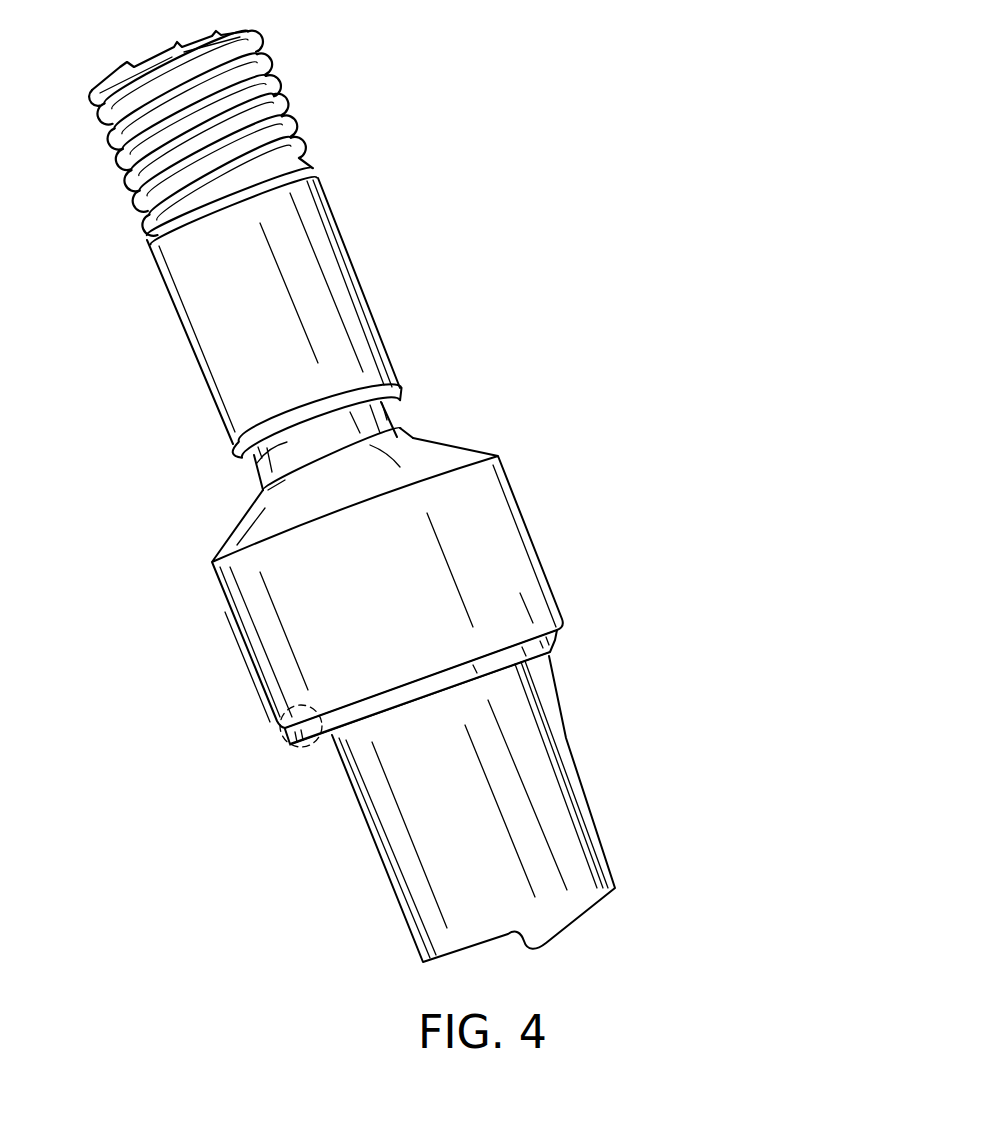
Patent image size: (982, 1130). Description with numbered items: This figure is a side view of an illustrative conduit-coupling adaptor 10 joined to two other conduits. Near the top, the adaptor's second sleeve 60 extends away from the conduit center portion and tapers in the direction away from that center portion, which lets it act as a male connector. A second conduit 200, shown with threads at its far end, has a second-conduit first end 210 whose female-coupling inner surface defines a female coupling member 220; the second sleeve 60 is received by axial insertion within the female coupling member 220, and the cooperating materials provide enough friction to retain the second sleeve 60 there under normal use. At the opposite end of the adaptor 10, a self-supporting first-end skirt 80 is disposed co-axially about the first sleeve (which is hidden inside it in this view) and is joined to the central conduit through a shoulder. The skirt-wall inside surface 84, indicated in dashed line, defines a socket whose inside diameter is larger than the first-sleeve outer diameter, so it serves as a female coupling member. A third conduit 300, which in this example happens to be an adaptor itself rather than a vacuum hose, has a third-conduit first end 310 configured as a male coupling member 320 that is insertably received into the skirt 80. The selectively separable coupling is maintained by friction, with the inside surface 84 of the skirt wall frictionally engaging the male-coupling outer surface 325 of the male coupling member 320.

The body 10 is at (522, 522).
The second sleeve 60 is at (258, 478).
The first-end skirt 80 is at (262, 660).
The skirt-wall inside surface 84 is at (318, 752).
The second conduit 200 is at (133, 183).
The second-conduit first end 210 is at (198, 317).
The female coupling member 220 is at (342, 303).
The third conduit 300 is at (372, 817).
The third-conduit first end 310 is at (547, 655).
The male coupling member 320 is at (557, 640).
The male-coupling outer surface 325 is at (556, 632).